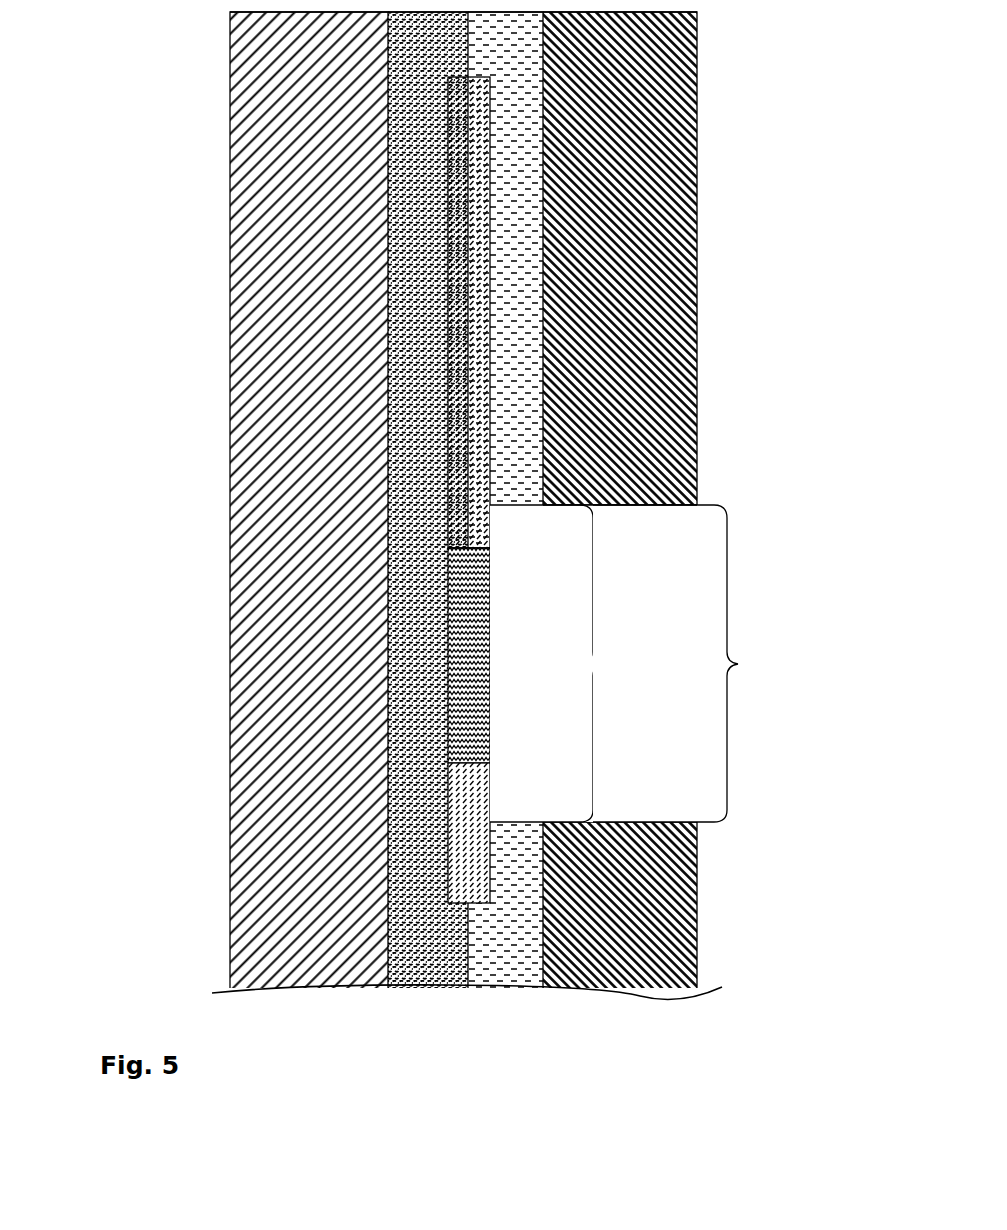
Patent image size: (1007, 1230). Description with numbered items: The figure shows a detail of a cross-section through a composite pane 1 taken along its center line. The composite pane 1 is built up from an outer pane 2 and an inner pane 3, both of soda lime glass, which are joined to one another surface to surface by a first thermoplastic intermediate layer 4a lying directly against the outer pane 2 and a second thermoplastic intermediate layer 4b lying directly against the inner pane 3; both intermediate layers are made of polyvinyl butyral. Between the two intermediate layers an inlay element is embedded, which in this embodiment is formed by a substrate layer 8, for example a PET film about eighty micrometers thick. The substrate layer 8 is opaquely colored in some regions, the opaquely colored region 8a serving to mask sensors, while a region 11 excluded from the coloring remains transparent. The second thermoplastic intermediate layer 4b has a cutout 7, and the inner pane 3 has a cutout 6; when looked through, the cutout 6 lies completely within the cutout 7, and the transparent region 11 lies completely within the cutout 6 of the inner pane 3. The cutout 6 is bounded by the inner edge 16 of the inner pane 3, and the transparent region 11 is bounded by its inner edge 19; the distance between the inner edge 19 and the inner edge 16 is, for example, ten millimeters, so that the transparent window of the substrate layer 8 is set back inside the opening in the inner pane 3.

The composite pane 1 is at (184, 57).
The outer pane 2 is at (292, 392).
The inner pane 3 is at (592, 150).
The first thermoplastic intermediate layer 4a is at (400, 560).
The second thermoplastic intermediate layer 4b is at (512, 355).
The cutout 6 is at (738, 664).
The cutout 7 is at (604, 664).
The substrate layer 8 is at (480, 488).
The opaquely colored region 8a is at (480, 120).
The region 11 is at (460, 695).
The inner edge 16 is at (620, 503).
The inner edge 19 is at (470, 548).